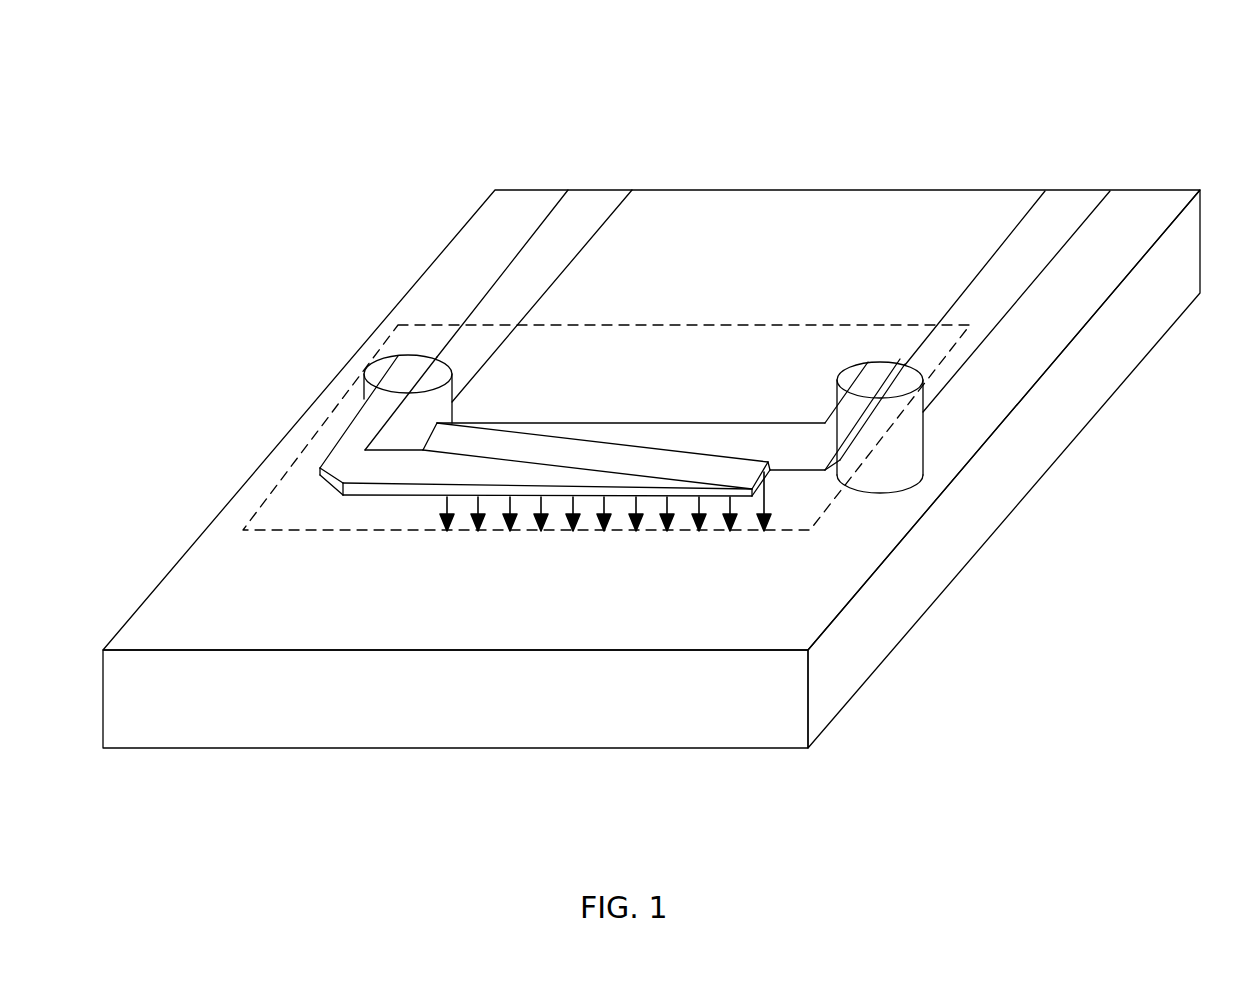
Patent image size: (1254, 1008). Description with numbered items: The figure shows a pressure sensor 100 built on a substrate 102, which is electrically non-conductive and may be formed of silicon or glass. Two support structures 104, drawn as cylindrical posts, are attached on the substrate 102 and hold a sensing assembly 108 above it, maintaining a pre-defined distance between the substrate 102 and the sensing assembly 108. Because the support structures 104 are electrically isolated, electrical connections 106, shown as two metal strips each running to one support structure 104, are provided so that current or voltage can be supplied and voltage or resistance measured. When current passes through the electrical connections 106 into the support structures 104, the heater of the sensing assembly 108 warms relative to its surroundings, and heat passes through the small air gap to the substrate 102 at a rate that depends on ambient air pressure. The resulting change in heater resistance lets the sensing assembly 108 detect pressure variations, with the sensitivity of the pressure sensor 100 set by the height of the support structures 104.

The pressure sensor 100 is at (1100, 116).
The substrate 102 is at (1090, 432).
The support structures 104 is at (838, 379).
The electrical connections 106 is at (590, 181).
The sensing assembly 108 is at (292, 468).